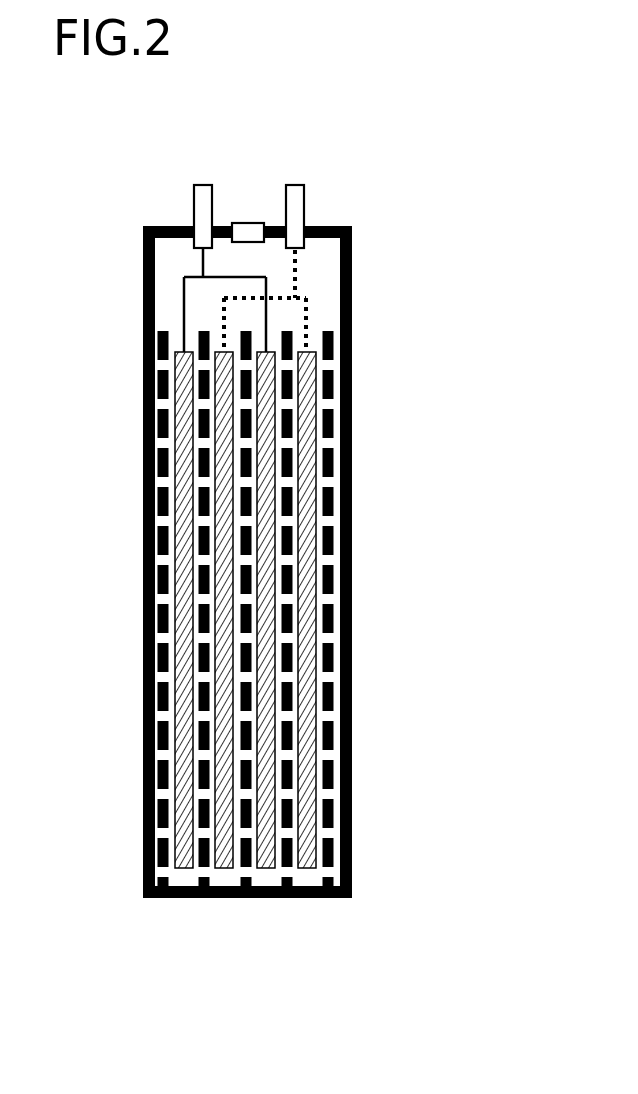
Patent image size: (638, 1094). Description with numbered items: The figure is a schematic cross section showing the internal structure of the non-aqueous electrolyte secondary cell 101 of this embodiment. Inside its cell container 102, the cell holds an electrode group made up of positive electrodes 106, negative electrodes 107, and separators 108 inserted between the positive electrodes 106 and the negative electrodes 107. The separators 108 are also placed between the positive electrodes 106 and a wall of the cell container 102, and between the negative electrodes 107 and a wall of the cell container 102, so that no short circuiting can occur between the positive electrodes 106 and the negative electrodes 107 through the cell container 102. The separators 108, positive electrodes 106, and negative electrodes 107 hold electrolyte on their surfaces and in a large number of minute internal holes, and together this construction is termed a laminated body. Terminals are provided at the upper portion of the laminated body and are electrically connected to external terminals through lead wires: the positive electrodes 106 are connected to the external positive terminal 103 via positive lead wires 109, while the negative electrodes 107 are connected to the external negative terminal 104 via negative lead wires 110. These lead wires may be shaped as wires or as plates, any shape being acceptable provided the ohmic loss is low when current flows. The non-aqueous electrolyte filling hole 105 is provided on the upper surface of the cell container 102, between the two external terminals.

The non-aqueous electrolyte secondary cell 101 is at (82, 546).
The cell container 102 is at (352, 502).
The external positive terminal 103 is at (194, 197).
The external negative terminal 104 is at (304, 194).
The non-aqueous electrolyte filling hole 105 is at (248, 223).
The positive electrodes 106 is at (176, 840).
The negative electrodes 107 is at (316, 840).
The separators 108 is at (158, 770).
The positive lead wires 109 is at (184, 305).
The negative lead wires 110 is at (306, 318).